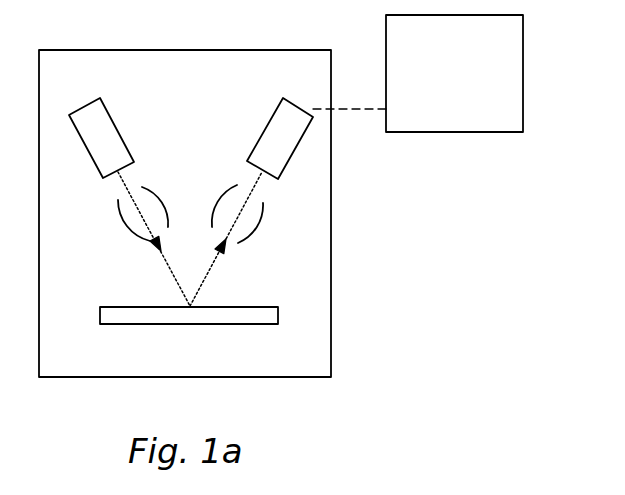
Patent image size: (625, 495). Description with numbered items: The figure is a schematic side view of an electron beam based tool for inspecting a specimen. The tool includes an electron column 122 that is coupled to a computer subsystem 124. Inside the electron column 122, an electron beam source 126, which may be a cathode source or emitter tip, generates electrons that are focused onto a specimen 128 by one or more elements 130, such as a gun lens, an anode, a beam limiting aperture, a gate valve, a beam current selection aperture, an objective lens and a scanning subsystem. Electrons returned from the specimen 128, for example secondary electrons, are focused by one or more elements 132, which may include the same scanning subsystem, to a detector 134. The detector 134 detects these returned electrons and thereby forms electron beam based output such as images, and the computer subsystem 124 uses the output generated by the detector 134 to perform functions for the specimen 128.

The electron column 122 is at (185, 200).
The computer subsystem 124 is at (437, 112).
The electron beam source 126 is at (121, 131).
The specimen 128 is at (206, 299).
The one or more elements 130 is at (107, 230).
The one or more elements 132 is at (281, 230).
The detector 134 is at (260, 132).